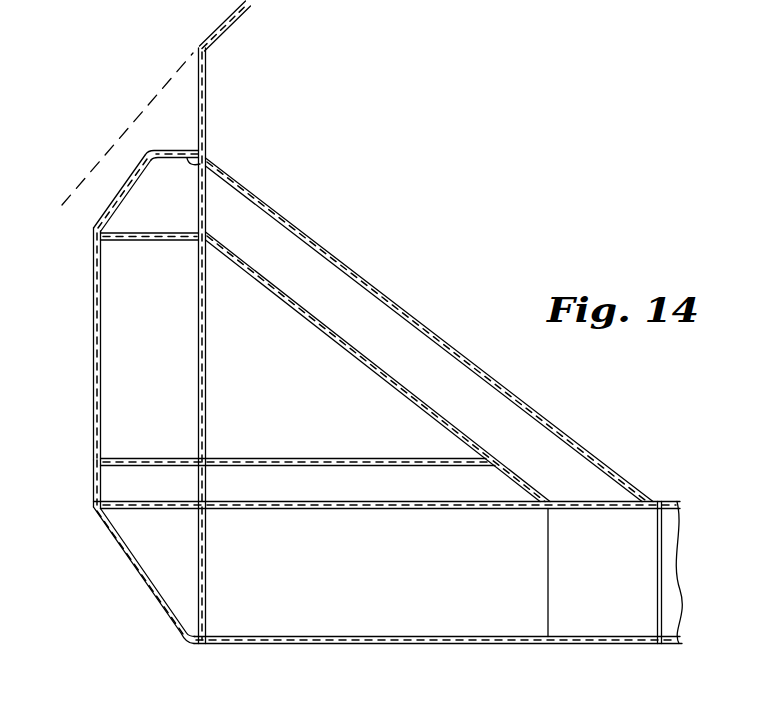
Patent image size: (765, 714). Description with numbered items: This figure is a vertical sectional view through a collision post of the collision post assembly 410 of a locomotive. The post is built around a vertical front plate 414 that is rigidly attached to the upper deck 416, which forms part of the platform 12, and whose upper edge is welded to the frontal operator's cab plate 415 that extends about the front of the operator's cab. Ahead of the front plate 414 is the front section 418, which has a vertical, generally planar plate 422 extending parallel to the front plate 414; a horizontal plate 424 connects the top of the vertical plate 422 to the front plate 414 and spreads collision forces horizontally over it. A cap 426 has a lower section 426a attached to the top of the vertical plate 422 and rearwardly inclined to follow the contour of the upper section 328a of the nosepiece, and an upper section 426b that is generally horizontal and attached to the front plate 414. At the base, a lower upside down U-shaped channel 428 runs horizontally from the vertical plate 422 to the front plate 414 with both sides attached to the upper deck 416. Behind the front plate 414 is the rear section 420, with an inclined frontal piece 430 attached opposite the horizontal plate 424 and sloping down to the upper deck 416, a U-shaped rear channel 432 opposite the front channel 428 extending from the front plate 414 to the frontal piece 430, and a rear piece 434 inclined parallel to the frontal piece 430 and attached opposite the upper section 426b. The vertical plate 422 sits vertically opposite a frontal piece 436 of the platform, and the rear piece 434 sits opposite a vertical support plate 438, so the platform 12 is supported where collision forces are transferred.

The platform 12 is at (440, 644).
The upper section of the nosepiece 328a is at (147, 105).
The collision post assembly 410 is at (420, 210).
The front plate 414 is at (208, 86).
The frontal operator's cab plate 415 is at (226, 33).
The upper deck 416 is at (300, 509).
The front section 418 is at (156, 315).
The rear section 420 is at (430, 330).
The vertical plate 422 is at (103, 370).
The horizontal plate 424 is at (133, 242).
The cap 426 is at (173, 176).
The lower section of the cap 426a is at (120, 204).
The upper section of the cap 426b is at (208, 158).
The lower upside down U-shaped channel 428 is at (173, 466).
The frontal piece 430 is at (311, 323).
The rear channel 432 is at (247, 457).
The rear piece 434 is at (288, 217).
The frontal piece of the platform 436 is at (147, 587).
The vertical support plate 438 is at (663, 543).